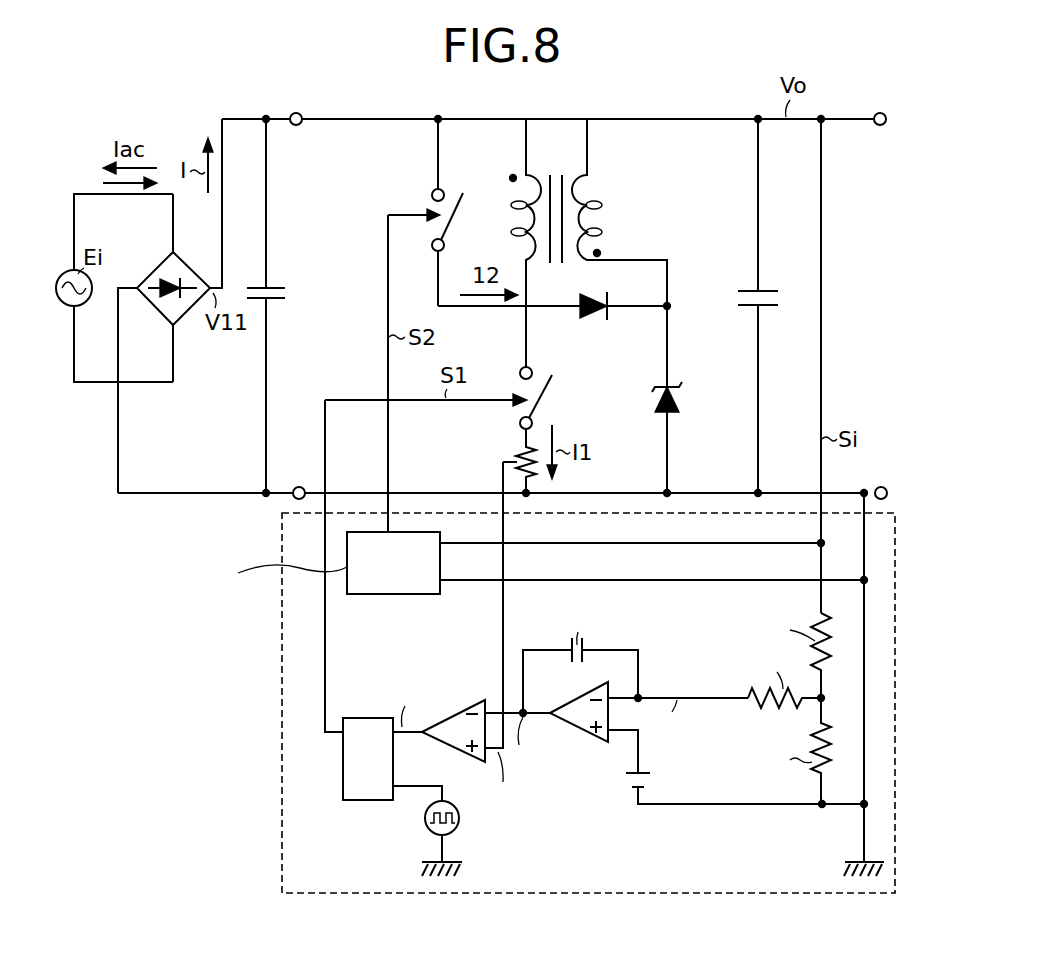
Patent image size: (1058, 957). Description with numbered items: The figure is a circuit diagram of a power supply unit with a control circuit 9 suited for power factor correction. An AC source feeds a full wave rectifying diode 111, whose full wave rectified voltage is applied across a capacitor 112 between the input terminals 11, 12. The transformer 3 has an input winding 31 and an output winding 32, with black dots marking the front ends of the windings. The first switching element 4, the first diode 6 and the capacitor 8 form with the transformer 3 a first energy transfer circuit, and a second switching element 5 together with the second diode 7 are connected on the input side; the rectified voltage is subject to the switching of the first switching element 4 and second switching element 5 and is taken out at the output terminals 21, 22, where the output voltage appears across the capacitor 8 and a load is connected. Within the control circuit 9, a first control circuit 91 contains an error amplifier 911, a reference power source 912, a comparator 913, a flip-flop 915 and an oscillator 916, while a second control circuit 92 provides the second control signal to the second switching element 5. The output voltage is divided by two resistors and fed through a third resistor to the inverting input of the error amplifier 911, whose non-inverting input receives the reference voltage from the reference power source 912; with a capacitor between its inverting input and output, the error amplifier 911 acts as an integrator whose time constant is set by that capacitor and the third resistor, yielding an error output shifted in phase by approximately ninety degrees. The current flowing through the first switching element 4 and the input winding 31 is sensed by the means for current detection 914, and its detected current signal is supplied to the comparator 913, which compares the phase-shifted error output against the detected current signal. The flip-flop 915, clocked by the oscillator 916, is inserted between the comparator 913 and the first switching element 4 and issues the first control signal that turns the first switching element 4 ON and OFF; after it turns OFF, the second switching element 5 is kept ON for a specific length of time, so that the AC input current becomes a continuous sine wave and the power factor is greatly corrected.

The input terminal 11 is at (297, 111).
The input terminal 12 is at (298, 485).
The full wave rectifying diode 111 is at (185, 266).
The input smoothing capacitor 112 is at (287, 296).
The transformer 3 is at (565, 236).
The input winding 31 is at (513, 207).
The output winding 32 is at (600, 207).
The first switching element 4 is at (540, 396).
The second switching element 5 is at (455, 222).
The first diode 6 is at (673, 386).
The second diode 7 is at (589, 315).
The capacitor 8 is at (748, 291).
The control circuit 9 is at (281, 642).
The output terminal 21 is at (886, 114).
The output terminal 22 is at (887, 487).
The first control circuit 91 is at (630, 855).
The second control circuit 92 is at (389, 585).
The error amplifier 911 is at (594, 736).
The reference power source 912 is at (651, 781).
The comparator 913 is at (460, 710).
The means for current detection 914 is at (519, 450).
The flip-flop 915 is at (357, 727).
The oscillator 916 is at (460, 822).